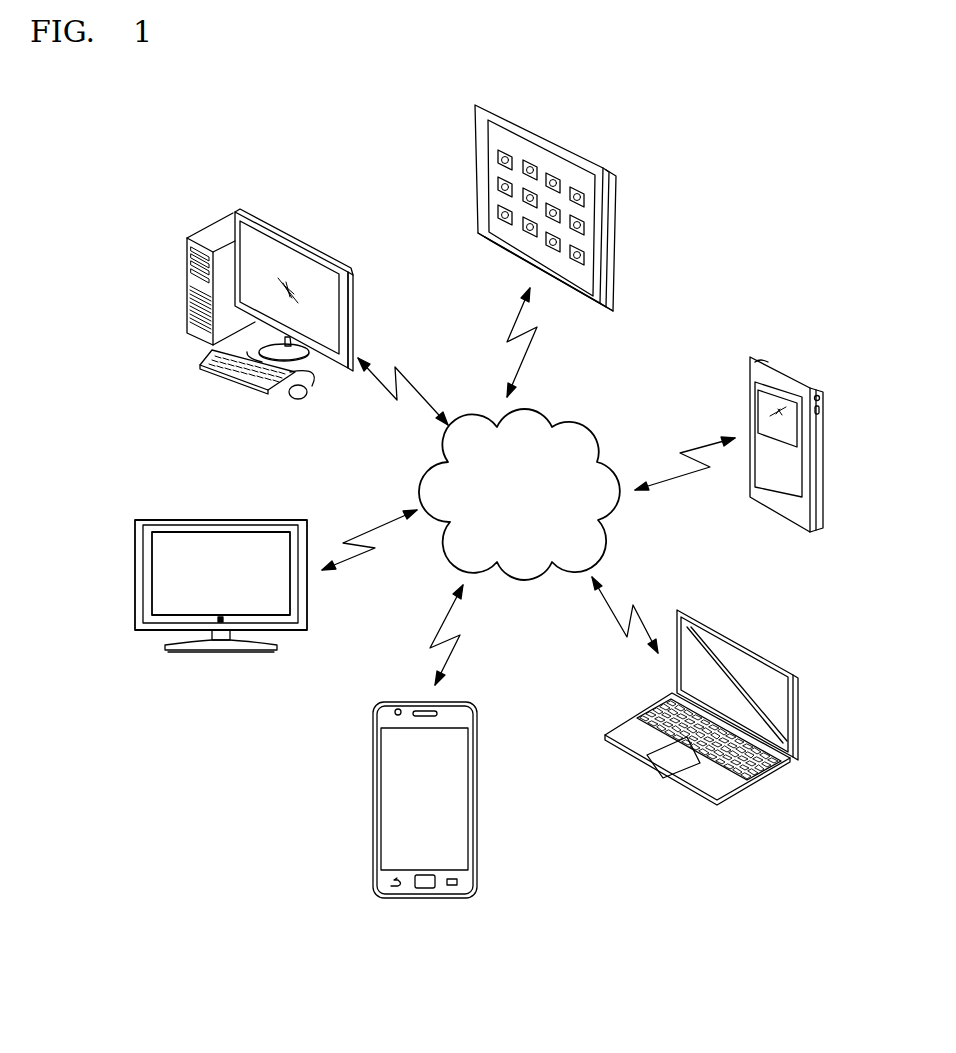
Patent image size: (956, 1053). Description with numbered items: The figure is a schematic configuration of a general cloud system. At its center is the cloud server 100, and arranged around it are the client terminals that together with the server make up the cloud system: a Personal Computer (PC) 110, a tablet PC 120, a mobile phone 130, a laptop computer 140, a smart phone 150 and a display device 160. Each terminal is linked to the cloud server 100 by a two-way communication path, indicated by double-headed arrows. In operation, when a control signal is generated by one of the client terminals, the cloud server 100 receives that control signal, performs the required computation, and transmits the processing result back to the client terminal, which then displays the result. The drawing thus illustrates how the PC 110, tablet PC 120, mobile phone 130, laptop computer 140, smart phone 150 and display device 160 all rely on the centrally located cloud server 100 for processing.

The cloud server 100 is at (587, 425).
The Personal Computer (PC) 110 is at (295, 237).
The tablet PC 120 is at (582, 150).
The mobile phone 130 is at (797, 368).
The laptop computer 140 is at (672, 783).
The smart phone 150 is at (402, 898).
The display device 160 is at (255, 520).